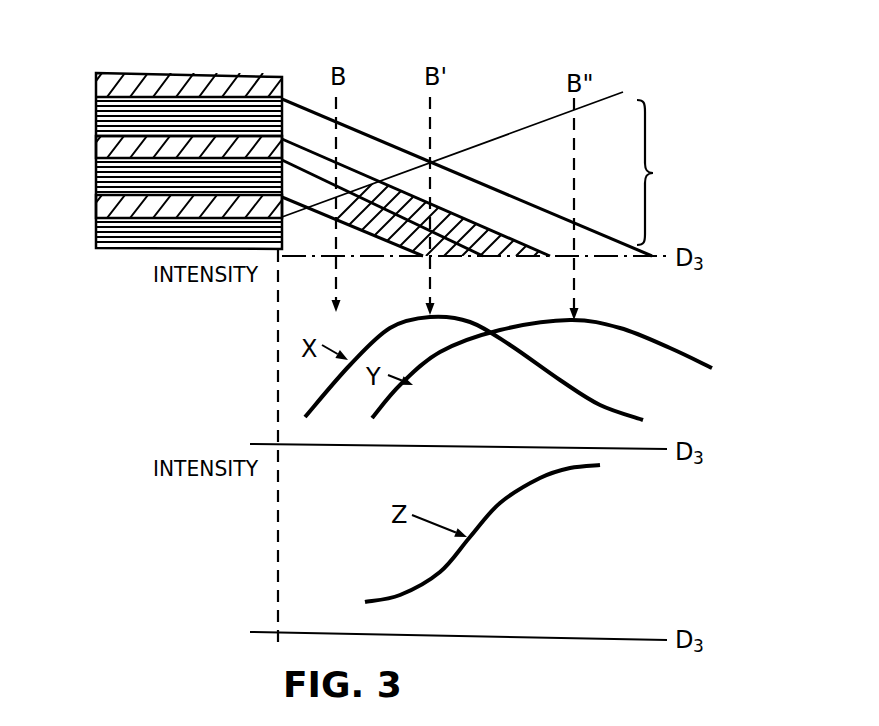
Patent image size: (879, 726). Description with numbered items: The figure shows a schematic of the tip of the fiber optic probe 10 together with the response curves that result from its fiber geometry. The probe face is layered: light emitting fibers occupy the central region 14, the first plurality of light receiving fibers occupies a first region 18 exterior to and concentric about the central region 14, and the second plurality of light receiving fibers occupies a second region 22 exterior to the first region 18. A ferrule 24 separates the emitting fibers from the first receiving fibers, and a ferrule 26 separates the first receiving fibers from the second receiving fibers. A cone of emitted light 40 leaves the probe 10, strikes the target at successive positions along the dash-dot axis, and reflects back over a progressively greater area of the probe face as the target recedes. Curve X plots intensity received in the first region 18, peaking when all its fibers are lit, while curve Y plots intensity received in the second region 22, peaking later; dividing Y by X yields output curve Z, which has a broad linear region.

The fiber optic probe 10 is at (209, 60).
The second region 22 is at (96, 117).
The ferrule 26 is at (96, 147).
The first region 18 is at (96, 176).
The ferrule 24 is at (96, 205).
The central region 14 is at (115, 237).
The cone of emitted light 40 is at (666, 172).